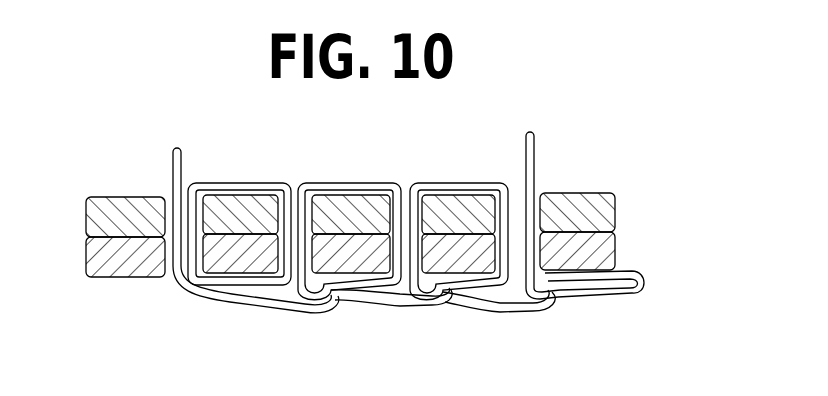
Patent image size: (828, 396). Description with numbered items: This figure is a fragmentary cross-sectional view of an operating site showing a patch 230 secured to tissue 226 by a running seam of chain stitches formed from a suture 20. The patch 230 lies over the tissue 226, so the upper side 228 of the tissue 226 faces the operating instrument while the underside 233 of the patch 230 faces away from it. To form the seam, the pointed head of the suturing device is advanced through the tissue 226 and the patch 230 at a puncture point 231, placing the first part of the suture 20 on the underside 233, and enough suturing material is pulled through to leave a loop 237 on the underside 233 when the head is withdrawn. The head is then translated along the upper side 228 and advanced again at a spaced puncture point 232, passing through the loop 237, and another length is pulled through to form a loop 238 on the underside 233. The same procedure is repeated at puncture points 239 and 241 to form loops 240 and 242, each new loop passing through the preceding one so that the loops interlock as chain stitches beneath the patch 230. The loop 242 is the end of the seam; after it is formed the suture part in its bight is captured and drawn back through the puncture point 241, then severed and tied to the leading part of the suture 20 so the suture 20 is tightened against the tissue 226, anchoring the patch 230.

The suture 20 is at (537, 143).
The tissue 226 is at (615, 198).
The upper side of the tissue 228 is at (133, 197).
The patch 230 is at (600, 250).
The puncture point 231 is at (186, 183).
The puncture point 232 is at (297, 185).
The underside of the patch 233 is at (137, 277).
The loop 237 is at (237, 303).
The loop 238 is at (370, 310).
The puncture point 239 is at (405, 185).
The loop 240 is at (475, 312).
The puncture point 241 is at (538, 190).
The loop 242 is at (570, 295).